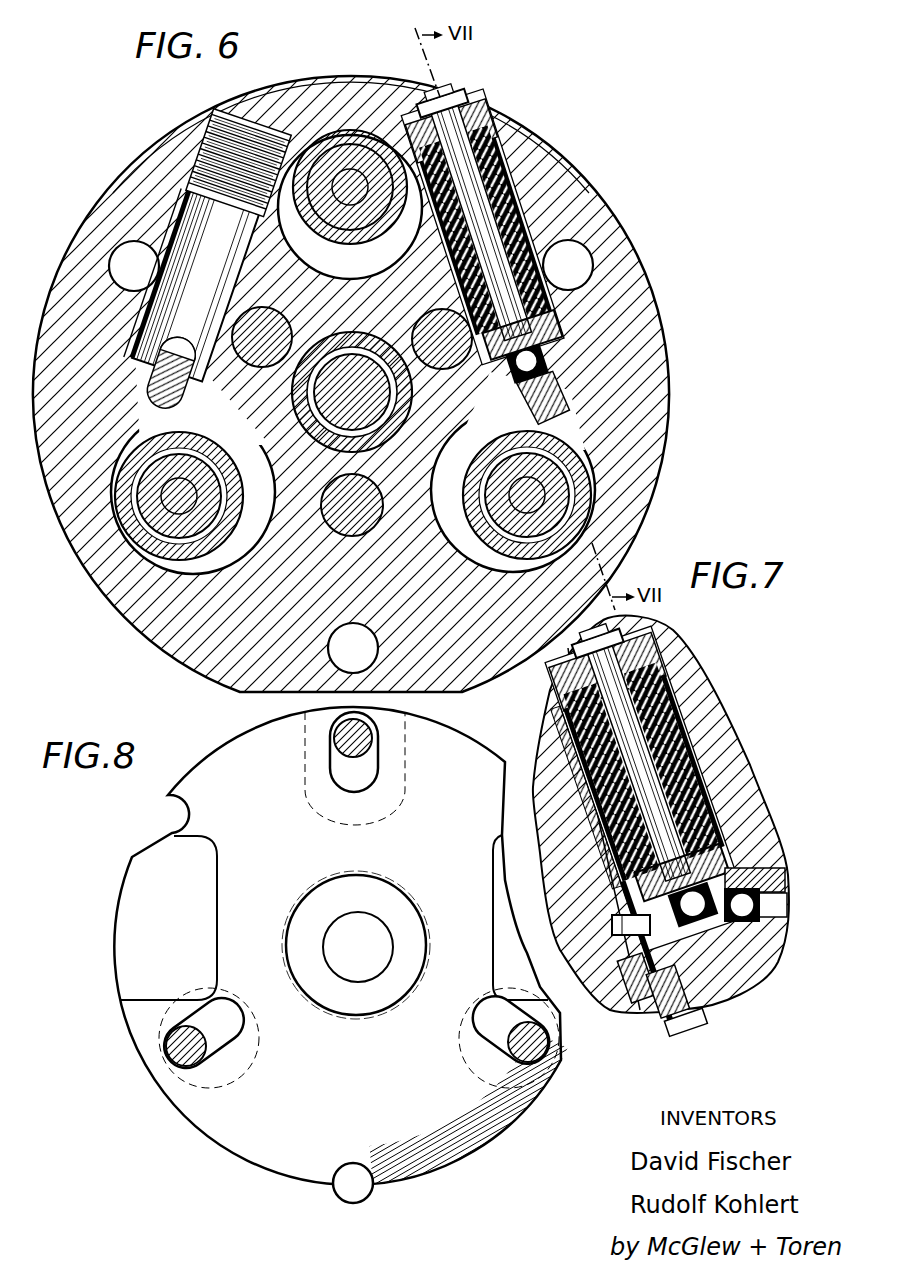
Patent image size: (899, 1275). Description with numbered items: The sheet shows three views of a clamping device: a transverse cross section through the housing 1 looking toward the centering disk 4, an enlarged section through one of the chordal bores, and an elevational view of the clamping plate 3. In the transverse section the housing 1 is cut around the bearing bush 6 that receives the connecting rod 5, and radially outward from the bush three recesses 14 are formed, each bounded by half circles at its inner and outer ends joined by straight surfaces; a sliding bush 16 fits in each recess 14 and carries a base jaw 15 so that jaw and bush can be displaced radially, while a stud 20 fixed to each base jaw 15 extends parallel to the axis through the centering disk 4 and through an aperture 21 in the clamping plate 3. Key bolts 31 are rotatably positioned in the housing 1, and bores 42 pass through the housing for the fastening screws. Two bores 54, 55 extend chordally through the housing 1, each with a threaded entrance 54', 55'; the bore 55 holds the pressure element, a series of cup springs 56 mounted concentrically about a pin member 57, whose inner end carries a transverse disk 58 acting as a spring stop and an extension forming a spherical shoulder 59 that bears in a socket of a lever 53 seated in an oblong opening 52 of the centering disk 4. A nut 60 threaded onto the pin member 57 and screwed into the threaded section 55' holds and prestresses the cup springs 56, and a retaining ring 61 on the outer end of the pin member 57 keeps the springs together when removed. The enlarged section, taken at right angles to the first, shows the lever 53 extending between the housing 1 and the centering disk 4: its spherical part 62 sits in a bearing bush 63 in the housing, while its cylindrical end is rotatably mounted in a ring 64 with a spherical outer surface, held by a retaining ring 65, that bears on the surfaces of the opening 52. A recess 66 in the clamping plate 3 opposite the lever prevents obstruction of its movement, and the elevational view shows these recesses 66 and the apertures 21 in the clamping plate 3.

In FIG. 6, the housing 1 is at (560, 165).
In FIG. 7, the housing 1 is at (712, 705).
In FIG. 7, the clamping plate 3 is at (552, 756).
In FIG. 8, the clamping plate 3 is at (237, 1130).
In FIG. 7, the centering disk 4 is at (592, 822).
In FIG. 6, the connecting rod 5 is at (352, 354).
In FIG. 6, the bearing bush 6 is at (412, 395).
In FIG. 6, the recesses 14 is at (244, 431).
In FIG. 6, the base jaws 15 is at (150, 478).
In FIG. 6, the sliding bushes 16 is at (82, 562).
In FIG. 6, the stud 20 is at (183, 562).
In FIG. 8, the stud 20 is at (375, 755).
In FIG. 8, the aperture 21 is at (336, 777).
In FIG. 6, the key bolt 31 is at (262, 312).
In FIG. 6, the bores 42 is at (110, 262).
In FIG. 7, the oblong openings 52 is at (600, 888).
In FIG. 6, the lever 53 is at (152, 376).
In FIG. 7, the lever 53 is at (690, 990).
In FIG. 6, the bore 54 is at (192, 281).
In FIG. 6, the threaded section 54' is at (208, 159).
In FIG. 6, the bore 55 is at (492, 229).
In FIG. 7, the bore 55 is at (673, 770).
In FIG. 6, the threaded section 55' is at (507, 221).
In FIG. 7, the threaded section 55' is at (669, 762).
In FIG. 6, the cup springs 56 is at (458, 262).
In FIG. 7, the cup springs 56 is at (733, 780).
In FIG. 6, the pin member 57 is at (493, 106).
In FIG. 7, the pin member 57 is at (658, 647).
In FIG. 6, the disk 58 is at (550, 323).
In FIG. 7, the disk 58 is at (708, 838).
In FIG. 6, the spherical shoulder 59 is at (541, 361).
In FIG. 7, the spherical shoulder 59 is at (723, 982).
In FIG. 6, the nut 60 is at (470, 110).
In FIG. 7, the nut 60 is at (572, 678).
In FIG. 6, the retaining ring 61 is at (438, 99).
In FIG. 7, the retaining ring 61 is at (657, 622).
In FIG. 7, the spherical part 62 is at (755, 915).
In FIG. 7, the bearing bush 63 is at (763, 865).
In FIG. 7, the ring 64 is at (625, 960).
In FIG. 7, the retaining ring 65 is at (612, 922).
In FIG. 7, the recess 66 is at (640, 1002).
In FIG. 8, the recess 66 is at (137, 923).